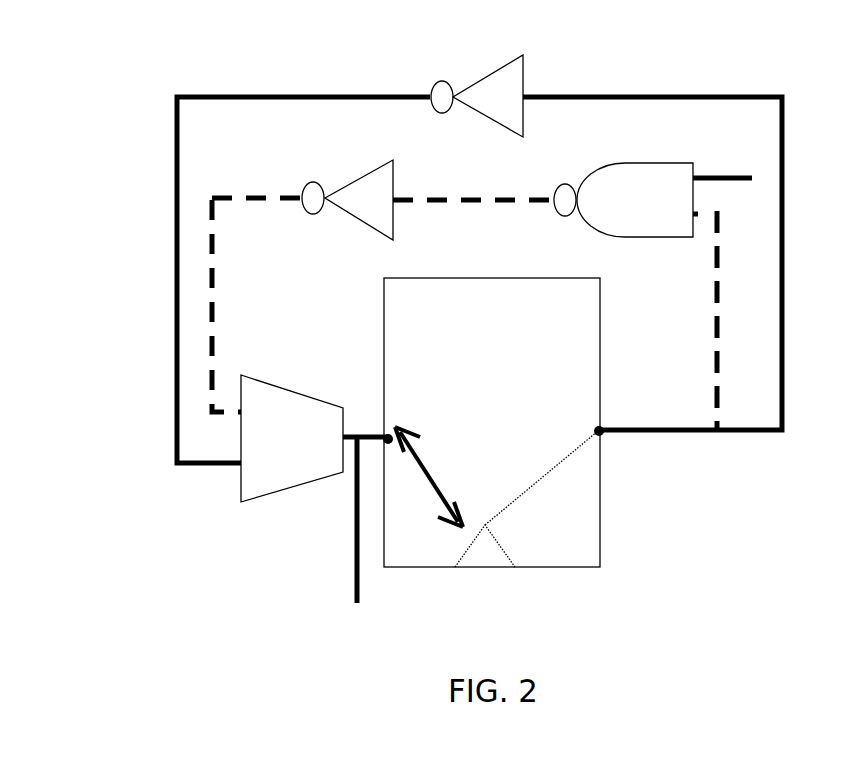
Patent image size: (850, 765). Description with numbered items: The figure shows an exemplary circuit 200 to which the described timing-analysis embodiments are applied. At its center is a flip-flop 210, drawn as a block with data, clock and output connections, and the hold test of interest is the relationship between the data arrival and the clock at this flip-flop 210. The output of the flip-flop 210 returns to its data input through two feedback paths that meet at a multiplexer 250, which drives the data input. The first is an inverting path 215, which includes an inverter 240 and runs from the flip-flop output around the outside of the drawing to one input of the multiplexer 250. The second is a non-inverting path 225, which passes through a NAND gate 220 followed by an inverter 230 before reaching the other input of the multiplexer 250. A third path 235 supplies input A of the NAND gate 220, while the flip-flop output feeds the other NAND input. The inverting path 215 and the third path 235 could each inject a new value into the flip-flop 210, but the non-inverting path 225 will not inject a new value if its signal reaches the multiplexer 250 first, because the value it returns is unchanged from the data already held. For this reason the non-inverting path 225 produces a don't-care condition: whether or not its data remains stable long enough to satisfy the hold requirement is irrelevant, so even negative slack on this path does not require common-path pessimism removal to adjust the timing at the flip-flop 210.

The circuit 200 is at (105, 138).
The flip-flop 210 is at (602, 507).
The inverting path 215 is at (784, 307).
The NAND gate 220 is at (598, 167).
The non-inverting path 225 is at (715, 365).
The inverter 230 is at (365, 226).
The third path 235 is at (742, 140).
The inverter 240 is at (478, 74).
The multiplexer 250 is at (300, 487).